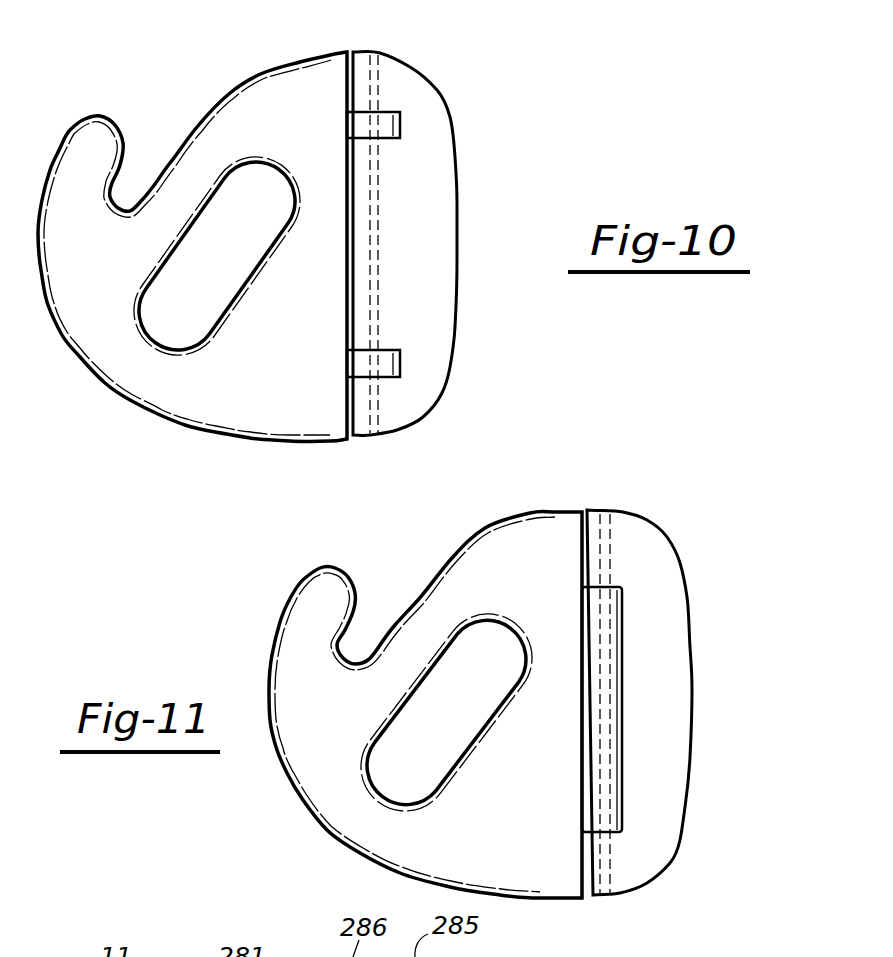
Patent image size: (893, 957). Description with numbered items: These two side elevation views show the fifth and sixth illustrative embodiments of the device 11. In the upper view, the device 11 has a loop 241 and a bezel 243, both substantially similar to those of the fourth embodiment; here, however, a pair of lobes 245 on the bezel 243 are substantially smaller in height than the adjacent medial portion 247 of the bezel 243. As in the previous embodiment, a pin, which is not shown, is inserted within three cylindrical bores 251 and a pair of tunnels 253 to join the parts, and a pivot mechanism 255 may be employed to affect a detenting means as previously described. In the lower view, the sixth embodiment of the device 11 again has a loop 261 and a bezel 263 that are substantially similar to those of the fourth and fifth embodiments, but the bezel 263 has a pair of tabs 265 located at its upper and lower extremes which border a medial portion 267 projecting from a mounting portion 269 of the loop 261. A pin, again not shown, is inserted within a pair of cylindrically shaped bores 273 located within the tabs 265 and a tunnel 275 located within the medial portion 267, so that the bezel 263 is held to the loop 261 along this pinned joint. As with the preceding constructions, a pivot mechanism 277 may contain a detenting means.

In FIG. 10, the device 11 is at (470, 152).
In FIG. 11, the device 11 is at (280, 630).
In FIG. 10, the loop 241 is at (218, 380).
In FIG. 10, the bezel 243 is at (430, 385).
In FIG. 10, the lobes 245 is at (400, 115).
In FIG. 10, the medial portion 247 is at (363, 257).
In FIG. 10, the cylindrical bores 251 is at (378, 75).
In FIG. 10, the tunnels 253 is at (385, 130).
In FIG. 10, the pivot mechanism 255 is at (383, 145).
In FIG. 11, the loop 261 is at (387, 830).
In FIG. 11, the bezel 263 is at (675, 610).
In FIG. 11, the tabs 265 is at (597, 510).
In FIG. 11, the medial portion 267 is at (625, 718).
In FIG. 11, the mounting portion 269 is at (580, 563).
In FIG. 11, the cylindrically shaped bores 273 is at (605, 543).
In FIG. 11, the tunnel 275 is at (625, 645).
In FIG. 11, the pivot mechanism 277 is at (653, 575).